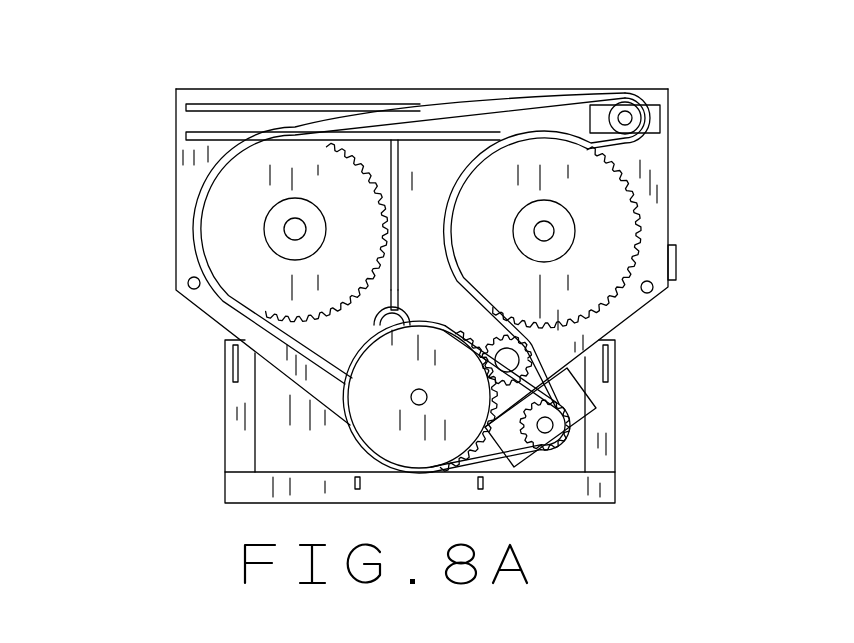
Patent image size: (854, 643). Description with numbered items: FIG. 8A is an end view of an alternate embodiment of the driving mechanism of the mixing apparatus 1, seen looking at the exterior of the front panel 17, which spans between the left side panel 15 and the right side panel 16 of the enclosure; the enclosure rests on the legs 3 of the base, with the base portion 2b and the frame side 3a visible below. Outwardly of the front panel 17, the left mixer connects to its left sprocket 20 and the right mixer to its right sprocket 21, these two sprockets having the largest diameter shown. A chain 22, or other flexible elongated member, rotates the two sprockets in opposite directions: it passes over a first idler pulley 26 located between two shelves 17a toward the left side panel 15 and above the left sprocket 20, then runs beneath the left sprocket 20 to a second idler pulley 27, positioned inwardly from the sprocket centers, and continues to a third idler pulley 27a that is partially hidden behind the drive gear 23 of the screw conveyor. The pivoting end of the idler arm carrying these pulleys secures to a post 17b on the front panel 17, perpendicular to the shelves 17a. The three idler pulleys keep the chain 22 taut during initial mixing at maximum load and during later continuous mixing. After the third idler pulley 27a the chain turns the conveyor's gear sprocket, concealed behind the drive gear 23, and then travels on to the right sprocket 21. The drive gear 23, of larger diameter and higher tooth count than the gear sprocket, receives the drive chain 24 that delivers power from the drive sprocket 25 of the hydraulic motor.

The drive assembly 1 is at (125, 55).
The base plate 2b is at (252, 487).
The legs 3 is at (245, 403).
The frame side wall 3a is at (602, 453).
The left side panel 15 is at (668, 168).
The right side panel 16 is at (175, 204).
The front panel 17 is at (450, 174).
The shelf 17a is at (185, 107).
The post 17b is at (398, 290).
The left sprocket 20 is at (605, 236).
The right sprocket 21 is at (235, 238).
The chain 22 is at (482, 110).
The drive gear 23 is at (405, 435).
The drive chain 24 is at (532, 470).
The drive sprocket 25 is at (553, 407).
The first idler pulley 26 is at (633, 108).
The second idler pulley 27 is at (510, 362).
The third idler pulley 27a is at (388, 322).